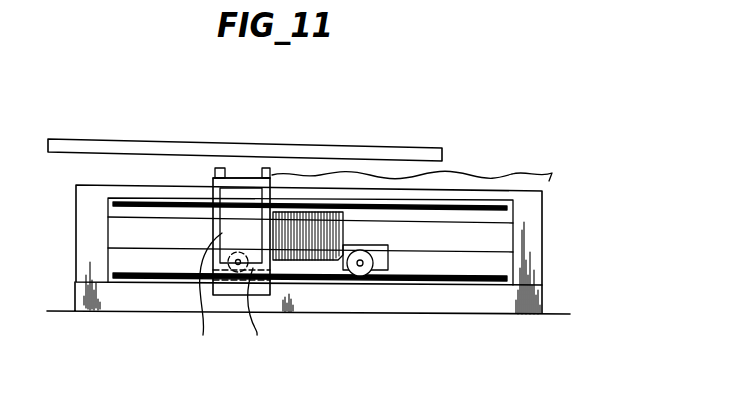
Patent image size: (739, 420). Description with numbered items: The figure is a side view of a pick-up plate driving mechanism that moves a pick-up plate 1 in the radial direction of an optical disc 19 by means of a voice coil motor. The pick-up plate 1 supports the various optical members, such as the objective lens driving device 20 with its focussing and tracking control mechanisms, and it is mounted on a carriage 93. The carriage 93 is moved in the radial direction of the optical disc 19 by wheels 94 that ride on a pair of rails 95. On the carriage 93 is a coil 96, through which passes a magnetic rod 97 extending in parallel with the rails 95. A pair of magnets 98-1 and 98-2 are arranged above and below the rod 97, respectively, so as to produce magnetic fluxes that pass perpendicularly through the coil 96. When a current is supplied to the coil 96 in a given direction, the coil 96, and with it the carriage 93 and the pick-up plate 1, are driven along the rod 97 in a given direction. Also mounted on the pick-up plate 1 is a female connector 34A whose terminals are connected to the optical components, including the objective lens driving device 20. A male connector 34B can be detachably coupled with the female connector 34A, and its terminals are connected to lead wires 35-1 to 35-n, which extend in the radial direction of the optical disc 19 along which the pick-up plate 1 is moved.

The optical disc 19 is at (130, 147).
The pick-up plate 1 is at (233, 176).
The female connector 34A is at (267, 173).
The male connector 34B is at (295, 136).
The objective lens driving device 20 is at (212, 175).
The lead wire 35-1 is at (492, 172).
The lead wire 35-n is at (576, 144).
The magnet 98-1 is at (490, 212).
The magnet 98-2 is at (482, 272).
The carriage 93 is at (201, 299).
The wheel 94 is at (360, 277).
The coil 96 is at (305, 260).
The rail 95 is at (417, 283).
The magnetic rod 97 is at (453, 245).